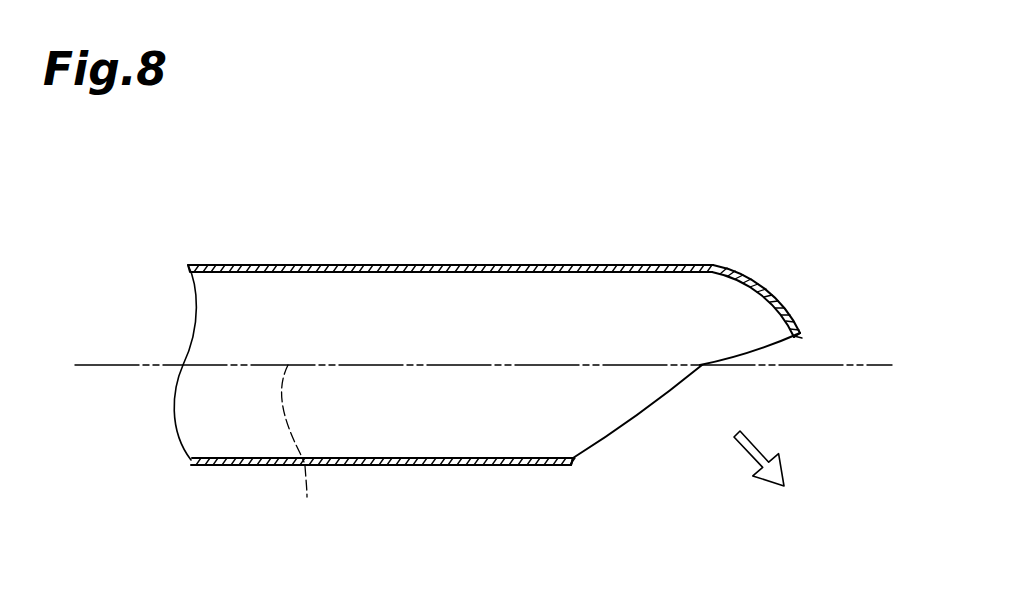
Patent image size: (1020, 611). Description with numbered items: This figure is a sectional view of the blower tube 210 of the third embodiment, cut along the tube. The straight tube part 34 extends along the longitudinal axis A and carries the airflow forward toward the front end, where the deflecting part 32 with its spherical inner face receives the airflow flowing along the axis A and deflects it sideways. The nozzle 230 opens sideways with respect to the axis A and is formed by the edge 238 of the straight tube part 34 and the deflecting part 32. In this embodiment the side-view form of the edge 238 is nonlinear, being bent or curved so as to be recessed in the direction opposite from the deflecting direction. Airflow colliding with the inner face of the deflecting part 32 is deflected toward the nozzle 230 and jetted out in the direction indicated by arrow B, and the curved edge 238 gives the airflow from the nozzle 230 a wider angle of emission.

The blower tube 210 is at (590, 215).
The straight tube part 34 is at (414, 265).
The deflecting part 32 is at (731, 265).
The nozzle 230 is at (628, 428).
The edge 238 is at (574, 463).
The longitudinal axis A is at (297, 450).
The arrow indicating jetting direction B is at (760, 453).